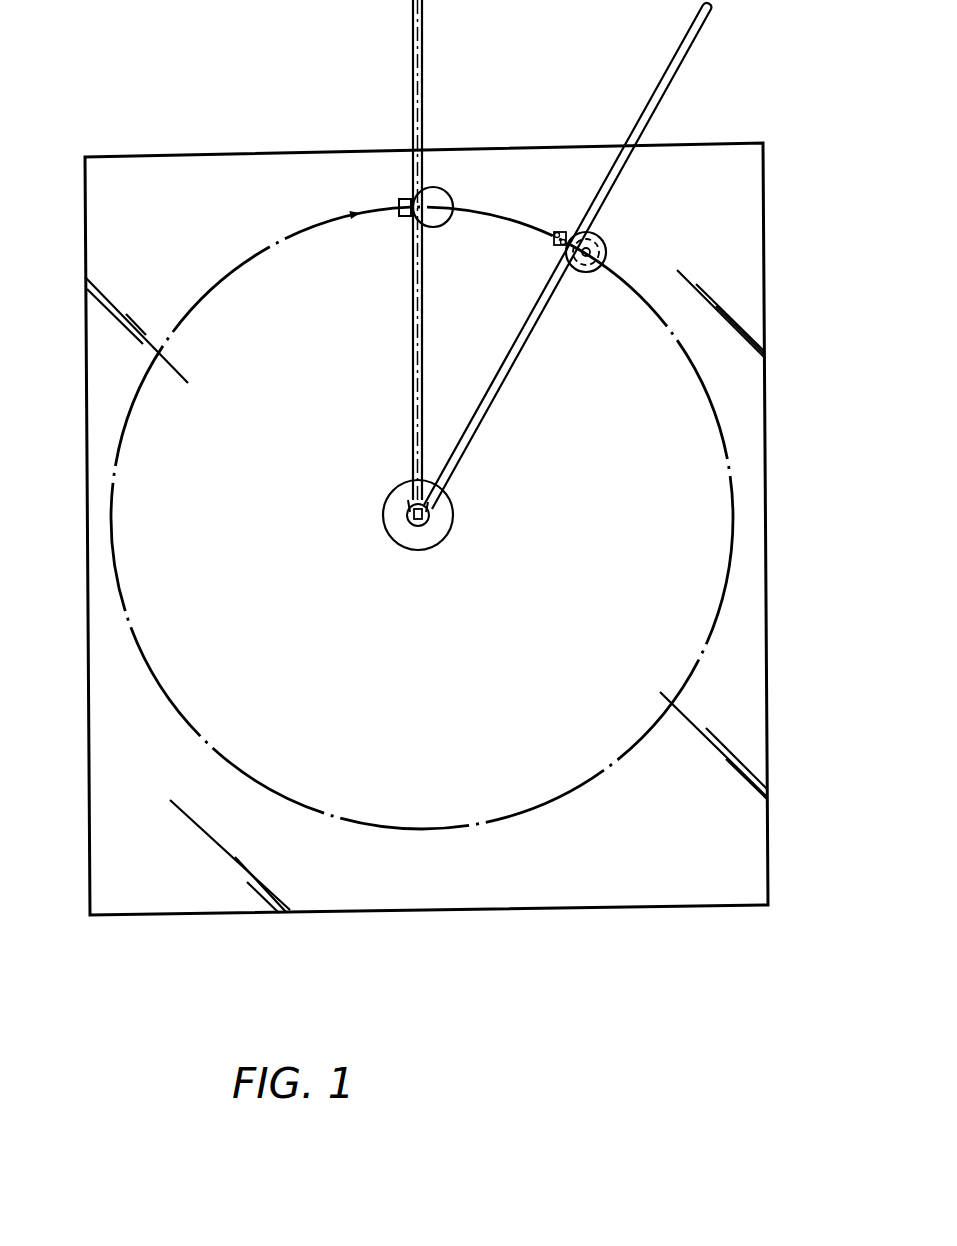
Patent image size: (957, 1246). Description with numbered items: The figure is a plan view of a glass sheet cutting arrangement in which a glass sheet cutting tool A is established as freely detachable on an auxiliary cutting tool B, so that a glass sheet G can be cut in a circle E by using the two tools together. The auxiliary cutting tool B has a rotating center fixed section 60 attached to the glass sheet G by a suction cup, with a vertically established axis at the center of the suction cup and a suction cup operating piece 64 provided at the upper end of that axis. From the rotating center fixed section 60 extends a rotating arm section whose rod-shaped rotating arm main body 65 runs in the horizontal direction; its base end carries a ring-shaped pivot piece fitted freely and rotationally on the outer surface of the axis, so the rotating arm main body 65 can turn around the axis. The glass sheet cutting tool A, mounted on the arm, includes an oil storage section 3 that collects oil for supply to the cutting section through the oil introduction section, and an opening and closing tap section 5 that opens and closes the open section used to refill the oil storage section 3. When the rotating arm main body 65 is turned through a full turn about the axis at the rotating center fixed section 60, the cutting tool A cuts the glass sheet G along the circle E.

The glass sheet G is at (143, 178).
The circle E is at (713, 398).
The rotating arm main body 65 is at (413, 100).
The glass sheet cutting tool A is at (455, 167).
The oil storage section 3 is at (583, 282).
The opening and closing tap section 5 is at (550, 245).
The rotating center fixed section 60 is at (448, 555).
The suction cup operating piece 64 is at (418, 526).
The auxiliary cutting tool B is at (490, 489).